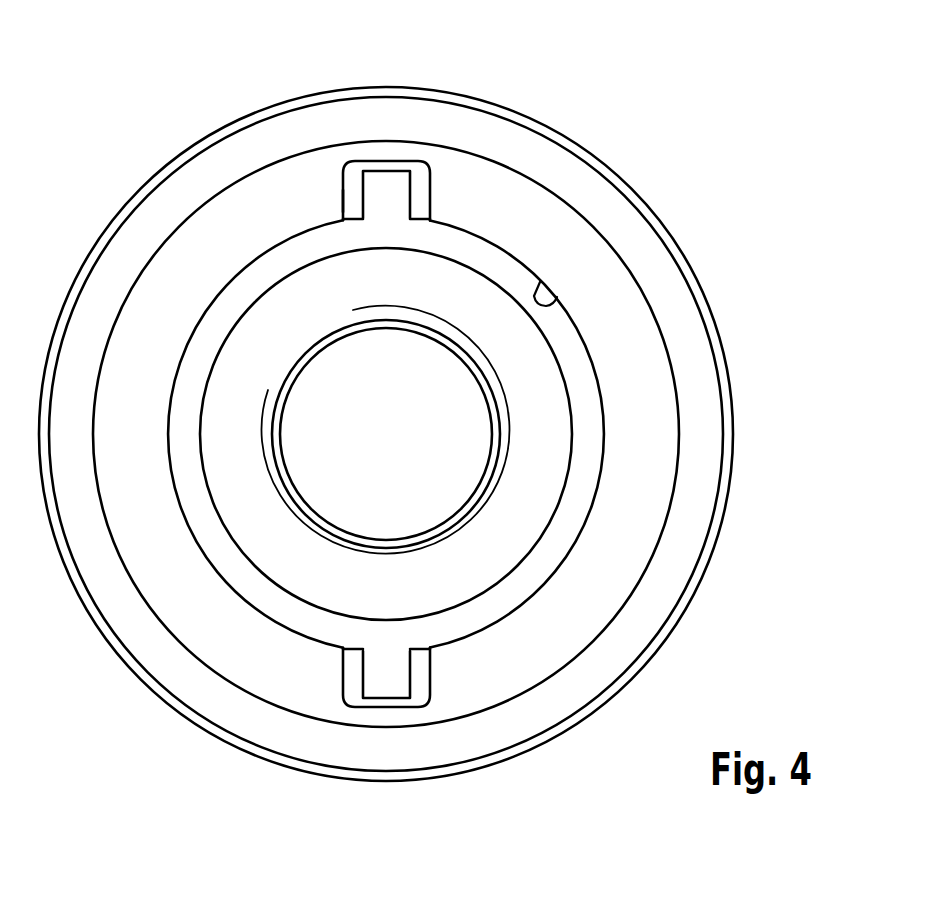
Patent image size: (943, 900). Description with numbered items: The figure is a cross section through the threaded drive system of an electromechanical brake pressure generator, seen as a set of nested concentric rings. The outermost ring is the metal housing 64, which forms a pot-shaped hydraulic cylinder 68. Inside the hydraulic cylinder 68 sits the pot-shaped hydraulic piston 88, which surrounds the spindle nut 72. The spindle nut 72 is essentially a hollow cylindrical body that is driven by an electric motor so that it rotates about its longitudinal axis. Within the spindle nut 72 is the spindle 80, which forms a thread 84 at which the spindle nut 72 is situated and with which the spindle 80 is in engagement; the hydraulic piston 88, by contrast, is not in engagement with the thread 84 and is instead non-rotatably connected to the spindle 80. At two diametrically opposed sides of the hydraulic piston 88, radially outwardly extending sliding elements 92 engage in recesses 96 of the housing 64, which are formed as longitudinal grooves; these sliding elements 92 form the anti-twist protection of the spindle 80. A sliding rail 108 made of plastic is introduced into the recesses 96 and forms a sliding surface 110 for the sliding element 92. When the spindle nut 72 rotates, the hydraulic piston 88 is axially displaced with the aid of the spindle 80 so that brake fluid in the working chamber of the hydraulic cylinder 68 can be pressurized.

The housing 64 is at (640, 528).
The hydraulic cylinder 68 is at (547, 303).
The spindle nut 72 is at (542, 390).
The spindle 80 is at (433, 435).
The thread 84 is at (500, 487).
The hydraulic piston 88 is at (567, 341).
The sliding element 92 is at (430, 176).
The recess 96 is at (343, 186).
The sliding rail 108 is at (423, 192).
The sliding surface 110 is at (388, 207).